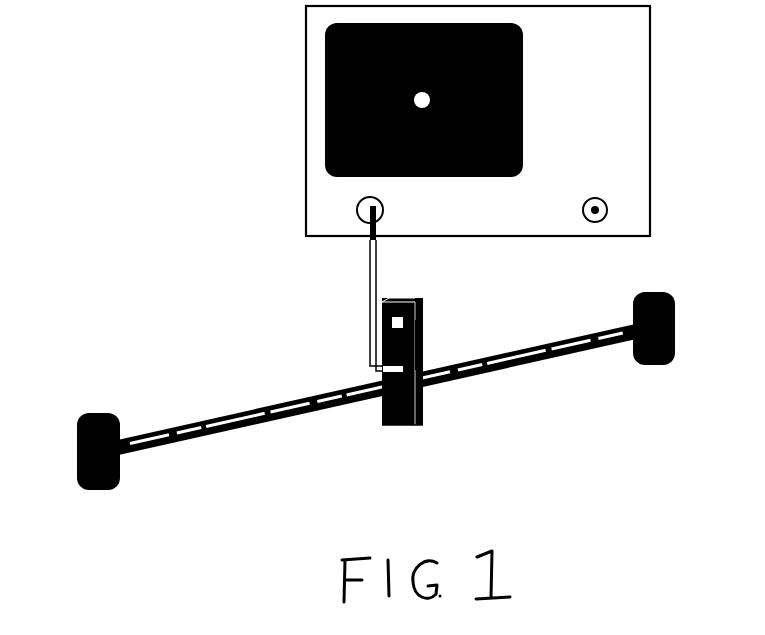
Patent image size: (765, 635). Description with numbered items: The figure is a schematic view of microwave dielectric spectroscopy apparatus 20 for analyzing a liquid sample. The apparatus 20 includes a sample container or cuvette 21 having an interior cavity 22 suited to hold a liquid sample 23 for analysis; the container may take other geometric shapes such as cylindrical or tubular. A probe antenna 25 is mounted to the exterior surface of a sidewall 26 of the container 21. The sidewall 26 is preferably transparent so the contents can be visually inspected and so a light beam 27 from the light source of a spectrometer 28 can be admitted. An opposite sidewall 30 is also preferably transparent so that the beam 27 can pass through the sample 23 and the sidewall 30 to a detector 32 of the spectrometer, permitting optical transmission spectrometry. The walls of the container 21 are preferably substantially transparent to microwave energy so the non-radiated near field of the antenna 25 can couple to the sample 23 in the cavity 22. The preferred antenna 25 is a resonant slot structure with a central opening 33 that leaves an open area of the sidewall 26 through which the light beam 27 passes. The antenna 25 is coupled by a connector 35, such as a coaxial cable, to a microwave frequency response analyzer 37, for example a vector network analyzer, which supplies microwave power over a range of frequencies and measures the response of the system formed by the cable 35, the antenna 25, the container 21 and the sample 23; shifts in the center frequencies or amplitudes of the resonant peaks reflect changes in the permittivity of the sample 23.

The microwave dielectric spectroscopy apparatus 20 is at (242, 55).
The sample container 21 is at (427, 427).
The interior cavity 22 is at (408, 297).
The liquid sample 23 is at (425, 340).
The probe antenna 25 is at (390, 425).
The sidewall 26 is at (380, 406).
The light beam 27 is at (258, 408).
The spectrometer 28 is at (98, 451).
The opposite sidewall 30 is at (427, 300).
The detector 32 is at (654, 328).
The central opening 33 is at (387, 378).
The connector 35 is at (370, 257).
The microwave frequency response analyzer 37 is at (478, 121).